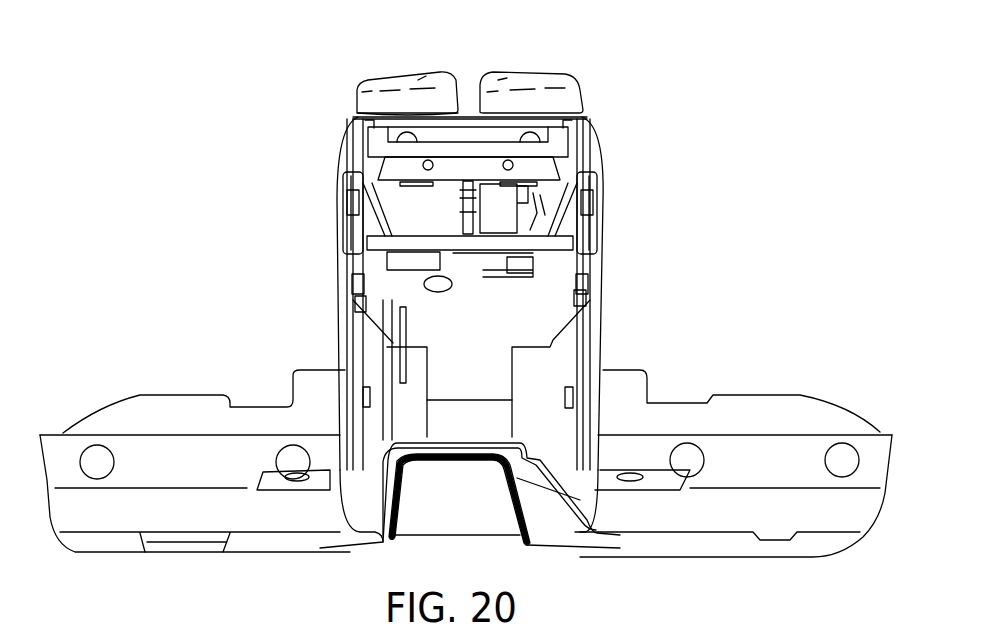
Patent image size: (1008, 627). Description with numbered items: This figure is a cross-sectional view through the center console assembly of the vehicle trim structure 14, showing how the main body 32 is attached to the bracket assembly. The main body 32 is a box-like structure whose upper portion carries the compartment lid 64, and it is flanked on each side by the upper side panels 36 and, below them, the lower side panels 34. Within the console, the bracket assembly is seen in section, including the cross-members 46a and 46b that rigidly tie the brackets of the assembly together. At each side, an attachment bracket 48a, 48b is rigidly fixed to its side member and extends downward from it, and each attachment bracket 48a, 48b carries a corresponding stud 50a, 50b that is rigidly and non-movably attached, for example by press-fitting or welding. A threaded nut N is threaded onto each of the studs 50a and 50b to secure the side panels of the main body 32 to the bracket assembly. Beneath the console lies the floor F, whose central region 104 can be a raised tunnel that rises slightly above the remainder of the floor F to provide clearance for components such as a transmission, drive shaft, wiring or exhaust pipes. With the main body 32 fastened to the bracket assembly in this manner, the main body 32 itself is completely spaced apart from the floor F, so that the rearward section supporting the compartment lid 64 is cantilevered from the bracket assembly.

The vehicle trim structure 14 is at (683, 165).
The main body 32 is at (541, 72).
The compartment lid 64 is at (388, 84).
The upper side panels 36 is at (348, 147).
The lower side panels 34 is at (347, 338).
The cross-member 46a is at (425, 242).
The cross-member 46b is at (413, 262).
The attachment bracket 48a is at (577, 267).
The attachment bracket 48b is at (350, 260).
The stud 50a is at (577, 297).
The stud 50b is at (360, 303).
The nut N is at (360, 285).
The central region 104 is at (400, 493).
The floor F is at (763, 460).